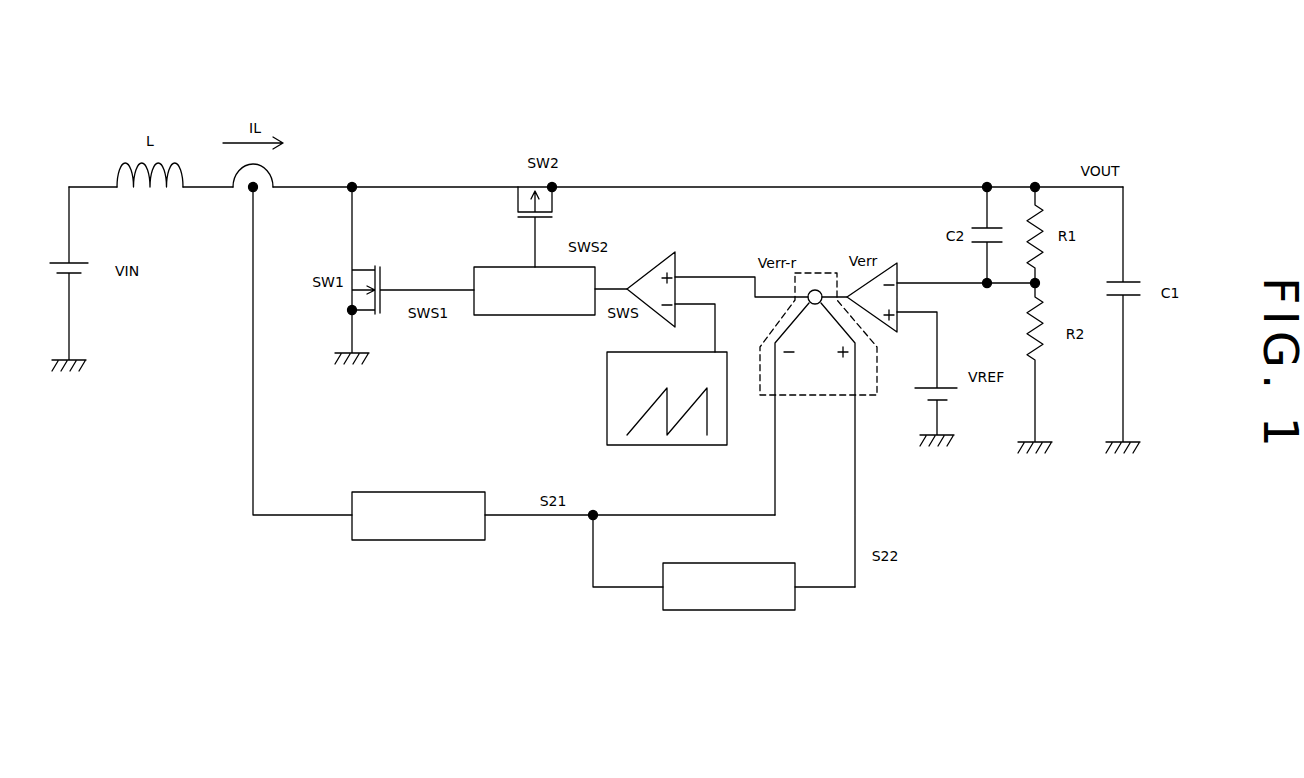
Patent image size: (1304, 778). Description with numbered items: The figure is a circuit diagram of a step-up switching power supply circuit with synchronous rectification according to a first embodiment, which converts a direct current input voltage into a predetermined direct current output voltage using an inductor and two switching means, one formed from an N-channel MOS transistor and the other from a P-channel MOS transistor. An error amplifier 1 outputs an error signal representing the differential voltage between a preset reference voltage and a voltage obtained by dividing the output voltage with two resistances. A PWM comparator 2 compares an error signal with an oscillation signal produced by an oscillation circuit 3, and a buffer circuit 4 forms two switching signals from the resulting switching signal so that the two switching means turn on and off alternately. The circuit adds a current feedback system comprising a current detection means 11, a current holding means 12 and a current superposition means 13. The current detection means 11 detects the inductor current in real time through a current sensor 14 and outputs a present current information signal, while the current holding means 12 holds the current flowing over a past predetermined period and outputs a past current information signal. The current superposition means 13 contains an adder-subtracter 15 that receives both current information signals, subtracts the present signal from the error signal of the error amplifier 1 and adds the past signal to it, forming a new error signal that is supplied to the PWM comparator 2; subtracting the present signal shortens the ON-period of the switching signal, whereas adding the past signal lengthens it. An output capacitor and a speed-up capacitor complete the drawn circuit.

The error amplifier 1 is at (893, 263).
The PWM comparator 2 is at (650, 285).
The oscillation circuit 3 is at (607, 400).
The buffer circuit 4 is at (487, 273).
The current detection means 11 is at (402, 540).
The current holding means 12 is at (688, 612).
The current superposition means 13 is at (812, 275).
The current sensor 14 is at (272, 178).
The adder-subtracter 15 is at (819, 290).